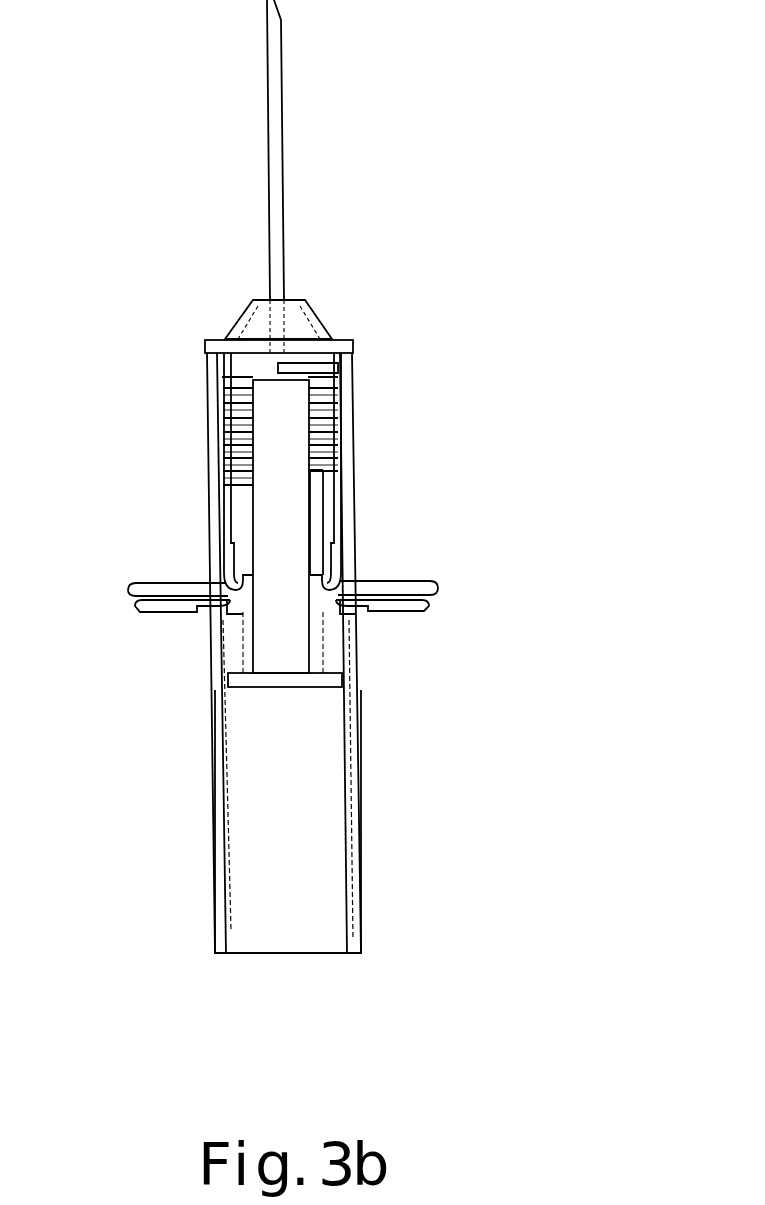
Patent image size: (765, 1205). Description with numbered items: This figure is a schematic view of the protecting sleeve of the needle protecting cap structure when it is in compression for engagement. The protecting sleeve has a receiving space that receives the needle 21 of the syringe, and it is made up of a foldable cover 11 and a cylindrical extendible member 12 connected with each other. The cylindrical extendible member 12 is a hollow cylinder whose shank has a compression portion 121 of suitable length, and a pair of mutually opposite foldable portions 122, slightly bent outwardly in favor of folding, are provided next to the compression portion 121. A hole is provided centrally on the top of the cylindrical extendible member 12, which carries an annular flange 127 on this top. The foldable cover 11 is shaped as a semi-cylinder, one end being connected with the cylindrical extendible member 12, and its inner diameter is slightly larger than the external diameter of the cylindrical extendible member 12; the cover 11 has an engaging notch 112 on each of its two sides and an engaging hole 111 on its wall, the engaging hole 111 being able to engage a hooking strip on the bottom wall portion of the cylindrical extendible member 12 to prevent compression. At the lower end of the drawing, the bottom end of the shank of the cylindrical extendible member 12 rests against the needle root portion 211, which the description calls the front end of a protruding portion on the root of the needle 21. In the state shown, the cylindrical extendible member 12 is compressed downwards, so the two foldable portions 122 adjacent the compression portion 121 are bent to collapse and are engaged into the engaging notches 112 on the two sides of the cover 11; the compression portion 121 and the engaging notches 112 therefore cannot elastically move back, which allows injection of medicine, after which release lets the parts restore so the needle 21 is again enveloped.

The foldable cover 11 is at (210, 403).
The engaging hole 111 is at (209, 742).
The engaging notch 112 is at (357, 577).
The cylindrical extendible member 12 is at (233, 508).
The compression portion 121 is at (325, 402).
The foldable portion 122 is at (162, 588).
The annular flange 127 is at (220, 340).
The needle 21 is at (313, 532).
The plunger end bar 211 is at (323, 683).